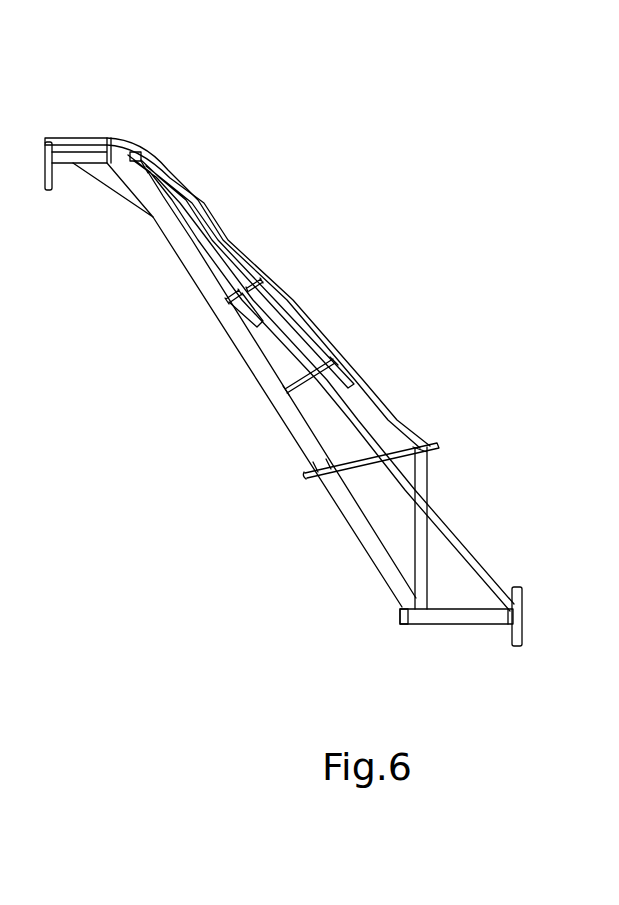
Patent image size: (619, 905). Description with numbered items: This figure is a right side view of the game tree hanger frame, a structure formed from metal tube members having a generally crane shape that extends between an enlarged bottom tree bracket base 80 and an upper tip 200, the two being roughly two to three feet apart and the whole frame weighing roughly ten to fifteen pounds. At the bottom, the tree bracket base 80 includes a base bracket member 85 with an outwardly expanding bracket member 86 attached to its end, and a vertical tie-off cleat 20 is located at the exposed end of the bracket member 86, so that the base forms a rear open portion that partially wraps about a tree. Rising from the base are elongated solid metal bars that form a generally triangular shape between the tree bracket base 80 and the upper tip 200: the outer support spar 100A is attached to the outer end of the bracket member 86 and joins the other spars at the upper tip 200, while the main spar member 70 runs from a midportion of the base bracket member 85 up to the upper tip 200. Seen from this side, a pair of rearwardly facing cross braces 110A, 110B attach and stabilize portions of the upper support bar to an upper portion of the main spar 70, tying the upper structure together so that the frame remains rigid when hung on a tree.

The upper tip 200 is at (325, 366).
The cross brace 110B is at (257, 327).
The cross brace 110A is at (348, 388).
The outer support spar 100A is at (460, 553).
The main spar member 70 is at (352, 512).
The tree bracket base 80 is at (435, 577).
The base bracket member 85 is at (398, 608).
The bracket member 86 is at (457, 624).
The vertical tie-off cleat 20 is at (517, 627).